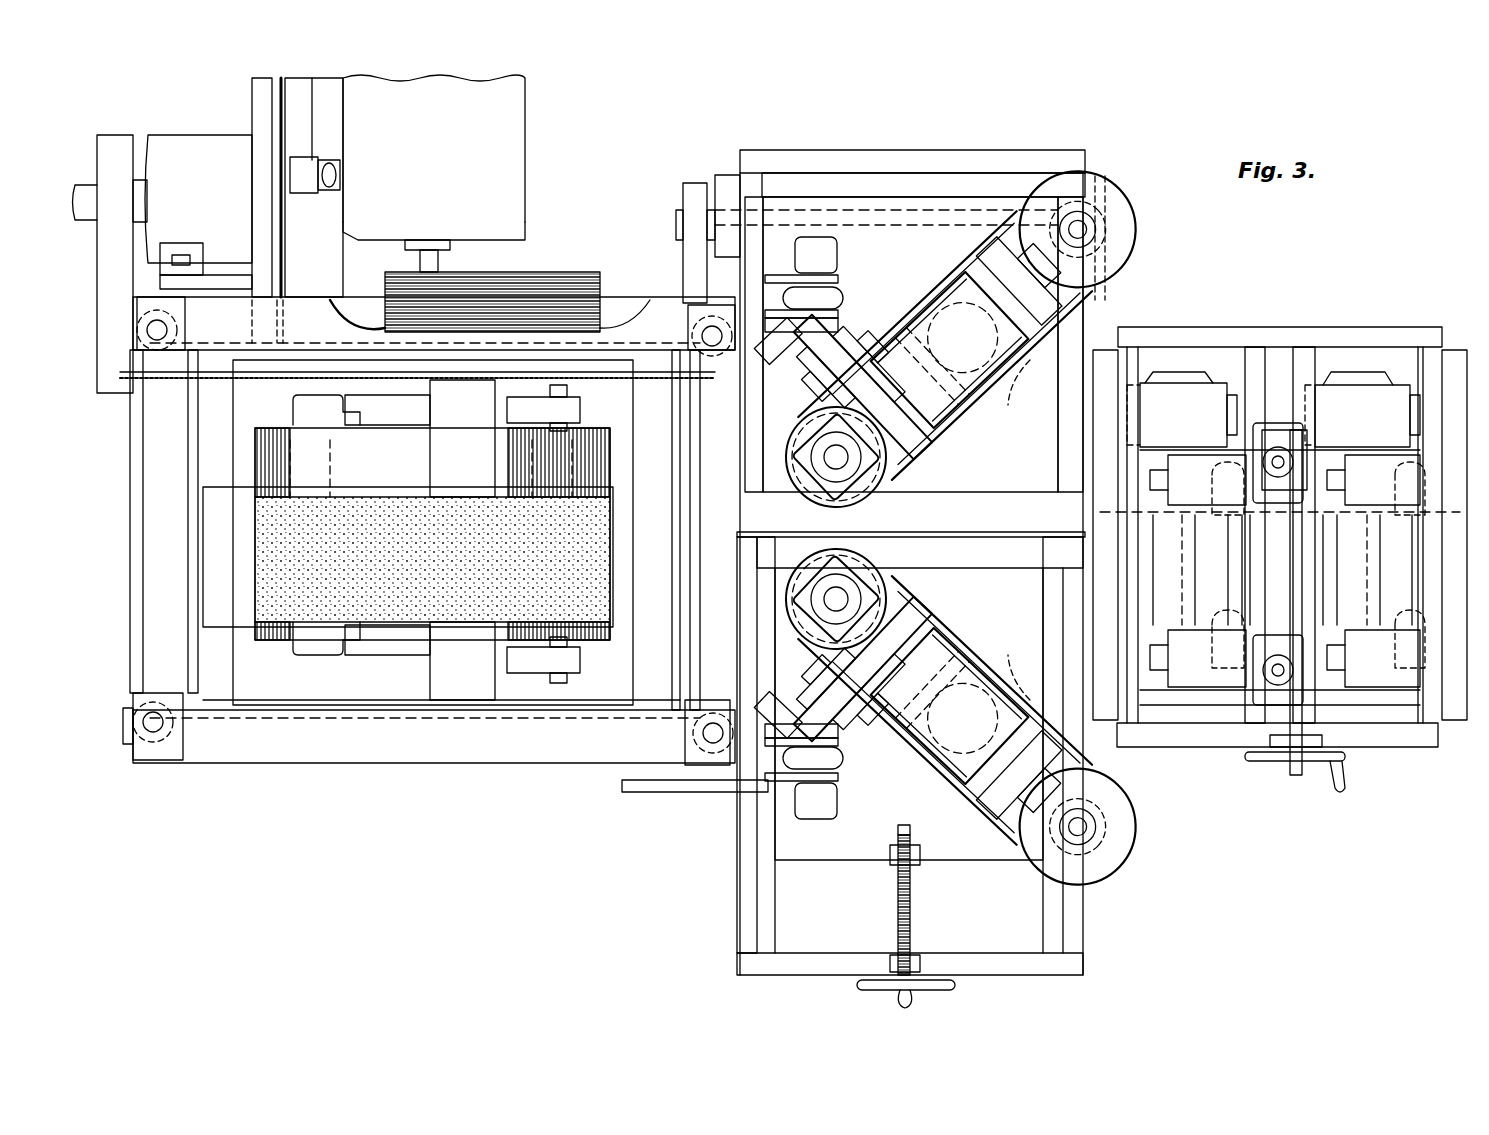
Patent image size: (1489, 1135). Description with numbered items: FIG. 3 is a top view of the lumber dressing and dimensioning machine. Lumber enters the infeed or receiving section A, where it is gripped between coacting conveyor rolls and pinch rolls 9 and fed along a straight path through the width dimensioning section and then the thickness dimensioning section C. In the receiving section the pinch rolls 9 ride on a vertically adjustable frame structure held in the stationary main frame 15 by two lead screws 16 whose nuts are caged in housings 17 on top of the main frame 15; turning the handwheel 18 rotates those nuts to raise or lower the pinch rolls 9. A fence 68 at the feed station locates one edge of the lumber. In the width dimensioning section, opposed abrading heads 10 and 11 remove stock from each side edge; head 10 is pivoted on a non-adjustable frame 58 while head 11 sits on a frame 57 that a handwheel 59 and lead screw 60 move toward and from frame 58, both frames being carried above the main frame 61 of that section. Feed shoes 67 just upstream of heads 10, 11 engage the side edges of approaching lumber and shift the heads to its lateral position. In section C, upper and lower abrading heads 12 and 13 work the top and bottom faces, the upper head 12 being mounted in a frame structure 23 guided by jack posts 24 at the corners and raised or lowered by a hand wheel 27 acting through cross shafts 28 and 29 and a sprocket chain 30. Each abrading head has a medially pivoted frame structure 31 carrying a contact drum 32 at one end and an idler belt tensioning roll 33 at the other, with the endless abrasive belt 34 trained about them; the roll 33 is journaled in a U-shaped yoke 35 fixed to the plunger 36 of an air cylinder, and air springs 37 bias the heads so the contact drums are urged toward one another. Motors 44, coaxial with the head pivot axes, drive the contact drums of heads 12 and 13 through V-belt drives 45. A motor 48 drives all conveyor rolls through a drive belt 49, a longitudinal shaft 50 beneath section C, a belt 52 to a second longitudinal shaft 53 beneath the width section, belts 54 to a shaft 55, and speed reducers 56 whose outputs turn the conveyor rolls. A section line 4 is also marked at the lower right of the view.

The section line 4- 4 is at (1090, 920).
The pinch rolls 9 is at (1352, 585).
The abrading head 10 is at (870, 345).
The abrading head 11 is at (938, 800).
The upper abrading head 12 is at (462, 635).
The lower abrading head 13 is at (1035, 155).
The main frame 15 is at (1420, 740).
The lead screws 16 is at (1265, 462).
The housings 17 is at (1272, 435).
The handwheel 18 is at (1268, 760).
The frame structure 23 is at (318, 300).
The jack posts 24 is at (160, 330).
The hand wheel 27 is at (675, 792).
The cross shaft 28 is at (695, 484).
The cross shaft 29 is at (133, 440).
The sprocket chain 30 is at (590, 375).
The frame structure 31 is at (911, 530).
The contact drum 32 is at (580, 455).
The idler belt tensioning roll 33 is at (270, 440).
The endless abrasive belt 34 is at (445, 512).
The U-shaped yoke 35 is at (400, 456).
The plunger 36 is at (1080, 292).
The air springs 37 is at (845, 312).
The motors 44 is at (490, 122).
The V-belt drives 45 is at (505, 272).
The motor 48 is at (222, 146).
The drive belt 49 is at (120, 148).
The shaft 50 is at (85, 196).
The belt 52 is at (697, 185).
The shaft 53 is at (935, 228).
The belts 54 is at (1112, 207).
The shaft 55 is at (1280, 410).
The speed reducers 56 is at (1178, 375).
The frame 57 is at (1035, 602).
The frame 58 is at (1030, 452).
The handwheel 59 is at (940, 975).
The lead screw 60 is at (910, 915).
The main frame 61 is at (1085, 742).
The feed shoes 67 is at (895, 555).
The fence 68 is at (1470, 520).
The infeed or receiving section A is at (1305, 318).
The thickness dimensioning section C is at (578, 268).